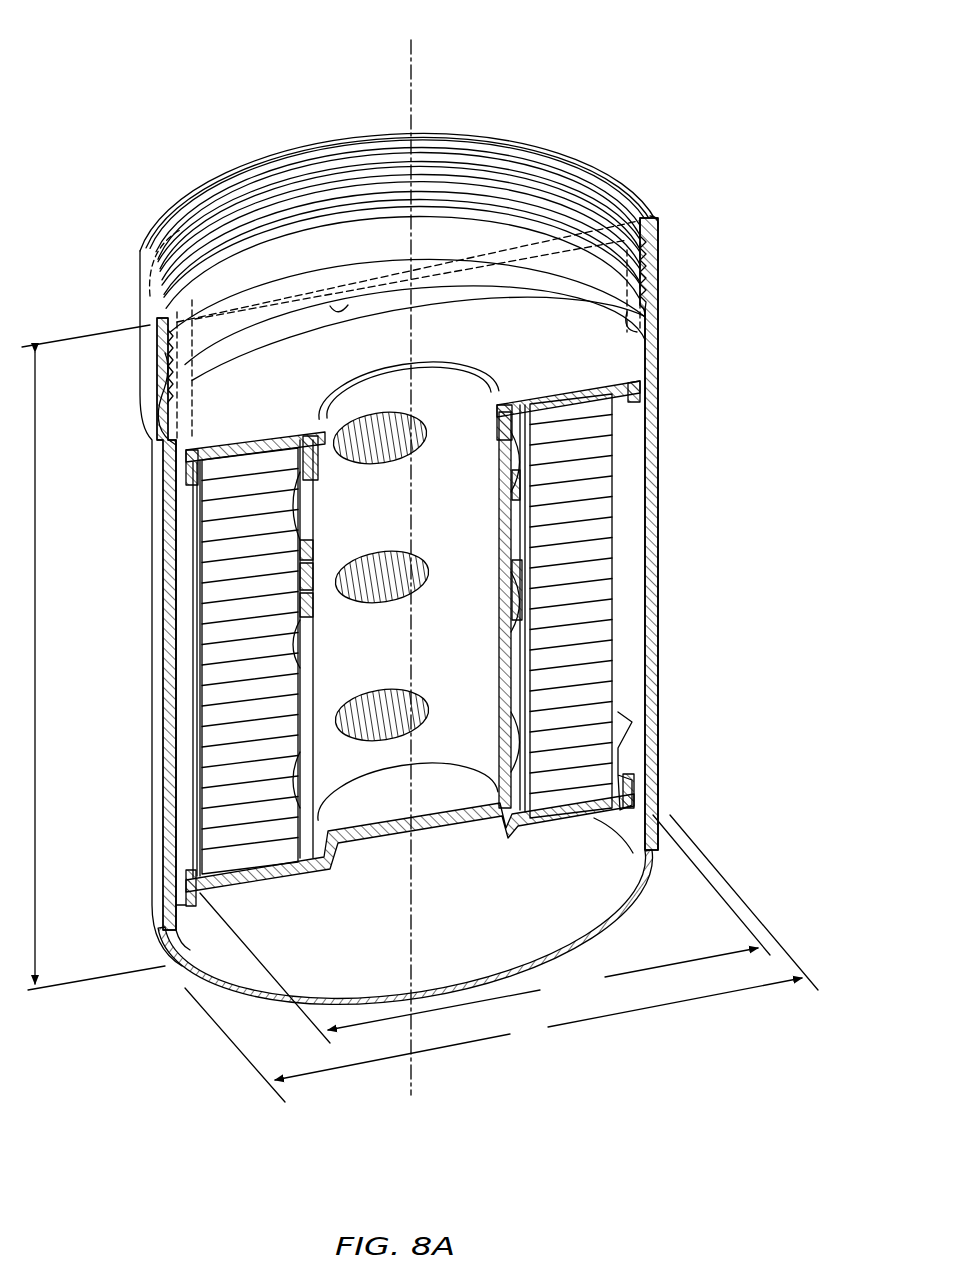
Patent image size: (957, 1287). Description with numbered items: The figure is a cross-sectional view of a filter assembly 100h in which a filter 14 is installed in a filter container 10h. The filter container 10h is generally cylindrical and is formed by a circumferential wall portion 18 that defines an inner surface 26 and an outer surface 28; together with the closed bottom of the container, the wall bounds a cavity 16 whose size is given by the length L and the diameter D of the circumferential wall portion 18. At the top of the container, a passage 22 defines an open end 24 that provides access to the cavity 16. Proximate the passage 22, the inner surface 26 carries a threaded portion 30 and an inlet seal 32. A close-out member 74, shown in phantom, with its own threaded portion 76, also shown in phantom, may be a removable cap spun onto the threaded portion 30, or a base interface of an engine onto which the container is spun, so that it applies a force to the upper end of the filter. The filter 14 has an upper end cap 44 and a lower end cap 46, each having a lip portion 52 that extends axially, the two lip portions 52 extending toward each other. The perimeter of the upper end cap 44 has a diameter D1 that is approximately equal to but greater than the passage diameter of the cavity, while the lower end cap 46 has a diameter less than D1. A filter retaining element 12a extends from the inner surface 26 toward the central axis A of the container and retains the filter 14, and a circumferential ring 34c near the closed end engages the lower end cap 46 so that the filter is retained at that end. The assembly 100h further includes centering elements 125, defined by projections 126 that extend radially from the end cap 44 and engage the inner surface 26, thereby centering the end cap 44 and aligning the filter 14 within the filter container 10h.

The filter assembly 100h is at (600, 82).
The centering element 125 is at (318, 265).
The projection 126 is at (347, 302).
The passage 22 is at (623, 207).
The open end 24 is at (657, 212).
The inlet seal 32 is at (650, 322).
The upper end cap 44 is at (568, 362).
The filter 14 is at (625, 442).
The filter container 10h is at (768, 490).
The cavity 16 is at (628, 572).
The filter retaining element 12a is at (625, 740).
The circumferential ring 34c is at (674, 777).
The lower end cap 46 is at (583, 892).
The close-out member 74 is at (160, 262).
The threaded portion 76 is at (165, 353).
The threaded portion 30 is at (183, 385).
The lip portion 52 is at (193, 440).
The inner surface 26 is at (190, 603).
The circumferential wall portion 18 is at (160, 686).
The outer surface 28 is at (174, 748).
The length L is at (93, 657).
The diameter D is at (501, 958).
The diameter of upper end cap D1 is at (485, 929).
The central axis A is at (407, 566).